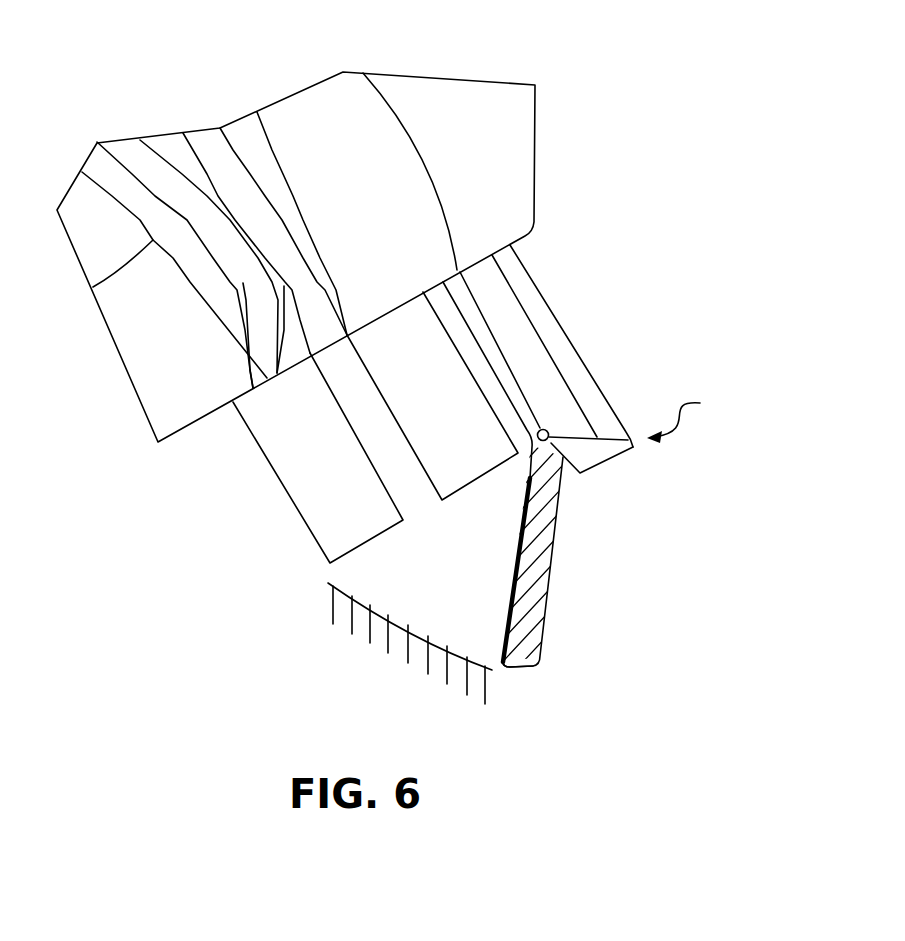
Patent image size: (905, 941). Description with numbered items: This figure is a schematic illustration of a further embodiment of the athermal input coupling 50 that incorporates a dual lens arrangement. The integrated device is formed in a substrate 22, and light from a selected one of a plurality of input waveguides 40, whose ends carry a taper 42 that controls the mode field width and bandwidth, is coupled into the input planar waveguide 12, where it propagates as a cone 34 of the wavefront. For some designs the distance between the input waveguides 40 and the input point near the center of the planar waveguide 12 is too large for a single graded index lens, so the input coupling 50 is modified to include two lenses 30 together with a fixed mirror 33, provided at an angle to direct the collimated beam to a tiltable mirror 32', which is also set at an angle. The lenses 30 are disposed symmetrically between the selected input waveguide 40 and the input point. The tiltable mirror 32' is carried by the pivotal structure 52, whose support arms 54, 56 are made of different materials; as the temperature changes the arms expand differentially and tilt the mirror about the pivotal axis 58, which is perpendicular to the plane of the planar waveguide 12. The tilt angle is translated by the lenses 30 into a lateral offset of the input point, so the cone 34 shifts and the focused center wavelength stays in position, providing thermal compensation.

The substrate 22 is at (488, 130).
The input planar waveguide 12 is at (383, 188).
The input waveguides 40 is at (93, 287).
The taper 42 is at (252, 370).
The cone 34 is at (260, 158).
The lens 30 is at (247, 446).
The fixed mirror 33 is at (330, 574).
The support arm 54 is at (485, 337).
The support arm 56 is at (568, 362).
The pivotal axis 58 is at (610, 462).
The pivotal structure 52 is at (582, 487).
The athermal input coupling 50 is at (698, 415).
The tiltable mirror 32' is at (529, 679).